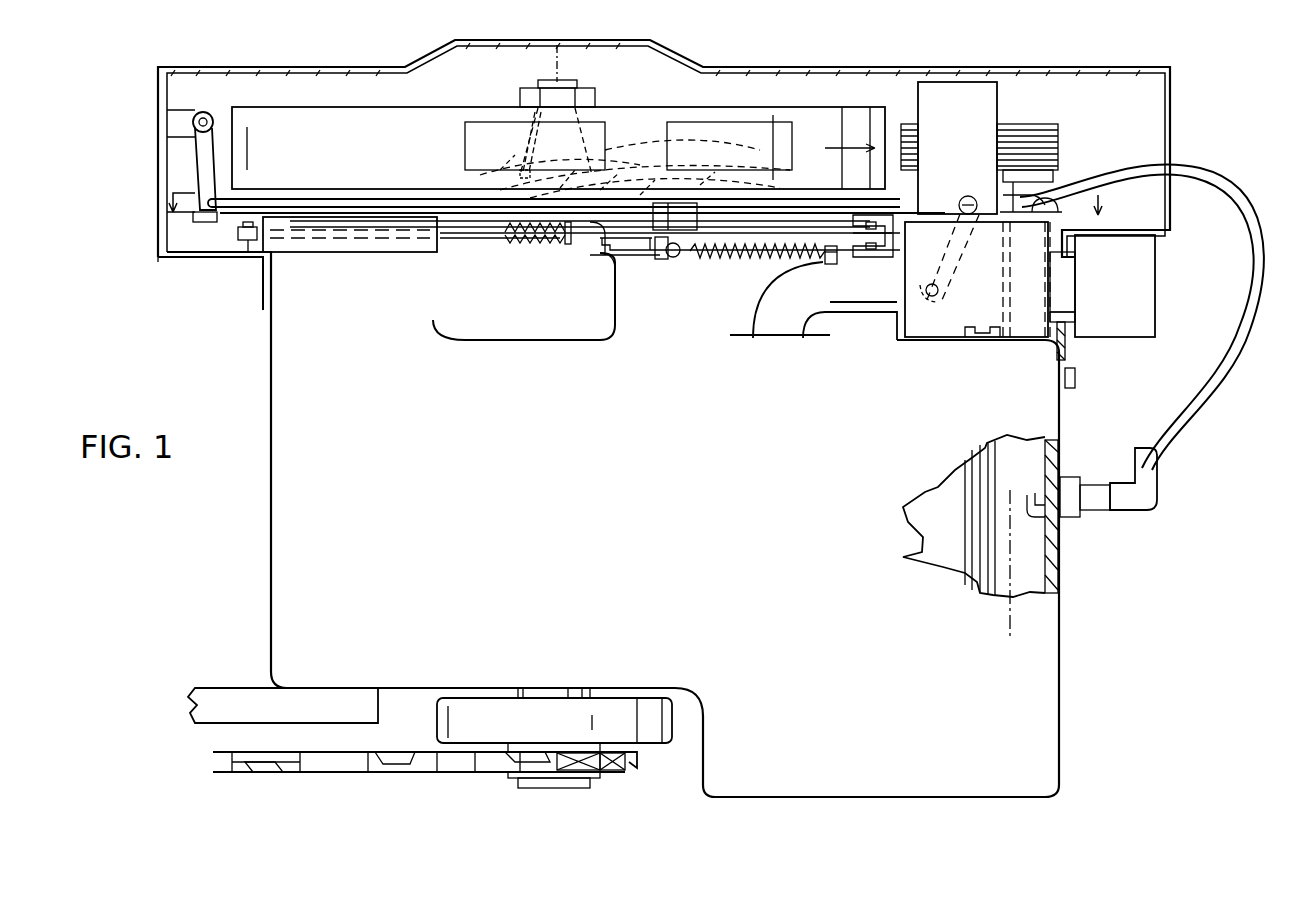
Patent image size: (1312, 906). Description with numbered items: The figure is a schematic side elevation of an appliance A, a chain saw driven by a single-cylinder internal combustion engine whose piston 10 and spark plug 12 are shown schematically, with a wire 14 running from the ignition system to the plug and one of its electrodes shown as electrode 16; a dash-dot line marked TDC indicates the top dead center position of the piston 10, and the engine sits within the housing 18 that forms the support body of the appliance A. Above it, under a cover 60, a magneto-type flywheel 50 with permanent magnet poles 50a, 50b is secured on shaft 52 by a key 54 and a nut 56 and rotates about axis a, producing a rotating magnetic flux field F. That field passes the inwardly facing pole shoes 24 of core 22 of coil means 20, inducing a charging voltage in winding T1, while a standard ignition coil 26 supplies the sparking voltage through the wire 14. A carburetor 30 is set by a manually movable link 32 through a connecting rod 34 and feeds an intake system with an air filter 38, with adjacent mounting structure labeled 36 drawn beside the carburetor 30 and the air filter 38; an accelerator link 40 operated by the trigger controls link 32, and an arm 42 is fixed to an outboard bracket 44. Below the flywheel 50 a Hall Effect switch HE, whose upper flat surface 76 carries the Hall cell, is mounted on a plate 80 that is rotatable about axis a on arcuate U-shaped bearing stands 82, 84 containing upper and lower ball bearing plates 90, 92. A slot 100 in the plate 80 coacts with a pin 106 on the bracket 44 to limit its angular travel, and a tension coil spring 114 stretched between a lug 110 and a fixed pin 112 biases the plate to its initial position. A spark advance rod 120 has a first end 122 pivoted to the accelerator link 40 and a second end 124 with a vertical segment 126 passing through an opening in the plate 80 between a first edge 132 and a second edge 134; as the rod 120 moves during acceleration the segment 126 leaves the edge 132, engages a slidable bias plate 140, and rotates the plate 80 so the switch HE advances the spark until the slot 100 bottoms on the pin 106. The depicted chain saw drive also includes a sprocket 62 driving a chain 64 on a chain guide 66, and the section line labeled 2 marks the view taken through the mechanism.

The appliance A is at (899, 47).
The piston 10 is at (922, 565).
The spark plug 12 is at (1090, 510).
The wire 14 is at (1246, 335).
The electrode 16 is at (1030, 515).
The housing 18 is at (271, 370).
The coil means 20 is at (1039, 115).
The core 22 is at (1058, 145).
The pole shoes 24 is at (910, 150).
The ignition coil 26 is at (1040, 218).
The carburetor 30 is at (935, 340).
The carburetor link 32 is at (968, 196).
The connecting rod 34 is at (312, 199).
The mounting block 36 is at (1075, 300).
The air filter 38 is at (1158, 262).
The accelerator link 40 is at (200, 148).
The arm 42 is at (185, 110).
The outboard bracket 44 is at (160, 257).
The flywheel 50 is at (760, 107).
The magnetic pole 50a is at (600, 140).
The magnetic pole 50b is at (795, 148).
The shaft 52 is at (595, 258).
The key 54 is at (522, 147).
The nut 56 is at (597, 92).
The cover 60 is at (688, 56).
The sprocket 62 is at (615, 775).
The chain 64 is at (440, 774).
The chain guide 66 is at (225, 690).
The upper flat surface 76 is at (690, 205).
The plate 80 is at (459, 250).
The bearing stand 82 is at (350, 252).
The bearing stand 84 is at (880, 296).
The upper ball bearing plate 90 is at (880, 222).
The lower ball bearing plate 92 is at (880, 246).
The slot 100 is at (258, 242).
The pin 106 is at (248, 252).
The lug 110 is at (676, 257).
The fixed pin 112 is at (830, 264).
The tension coil spring 114 is at (757, 260).
The spark advance rod 120 is at (480, 221).
The first end 122 is at (205, 224).
The second end 124 is at (640, 251).
The vertical segment 126 is at (625, 208).
The first edge 132 is at (605, 255).
The second edge 134 is at (518, 243).
The bias plate 140 is at (568, 244).
The magnetic flux field F is at (777, 182).
The Hall Effect switch HE is at (697, 216).
The winding T1 is at (990, 108).
The top dead center line TDC is at (1008, 579).
The axis a is at (557, 56).
The section line 2 is at (647, 224).